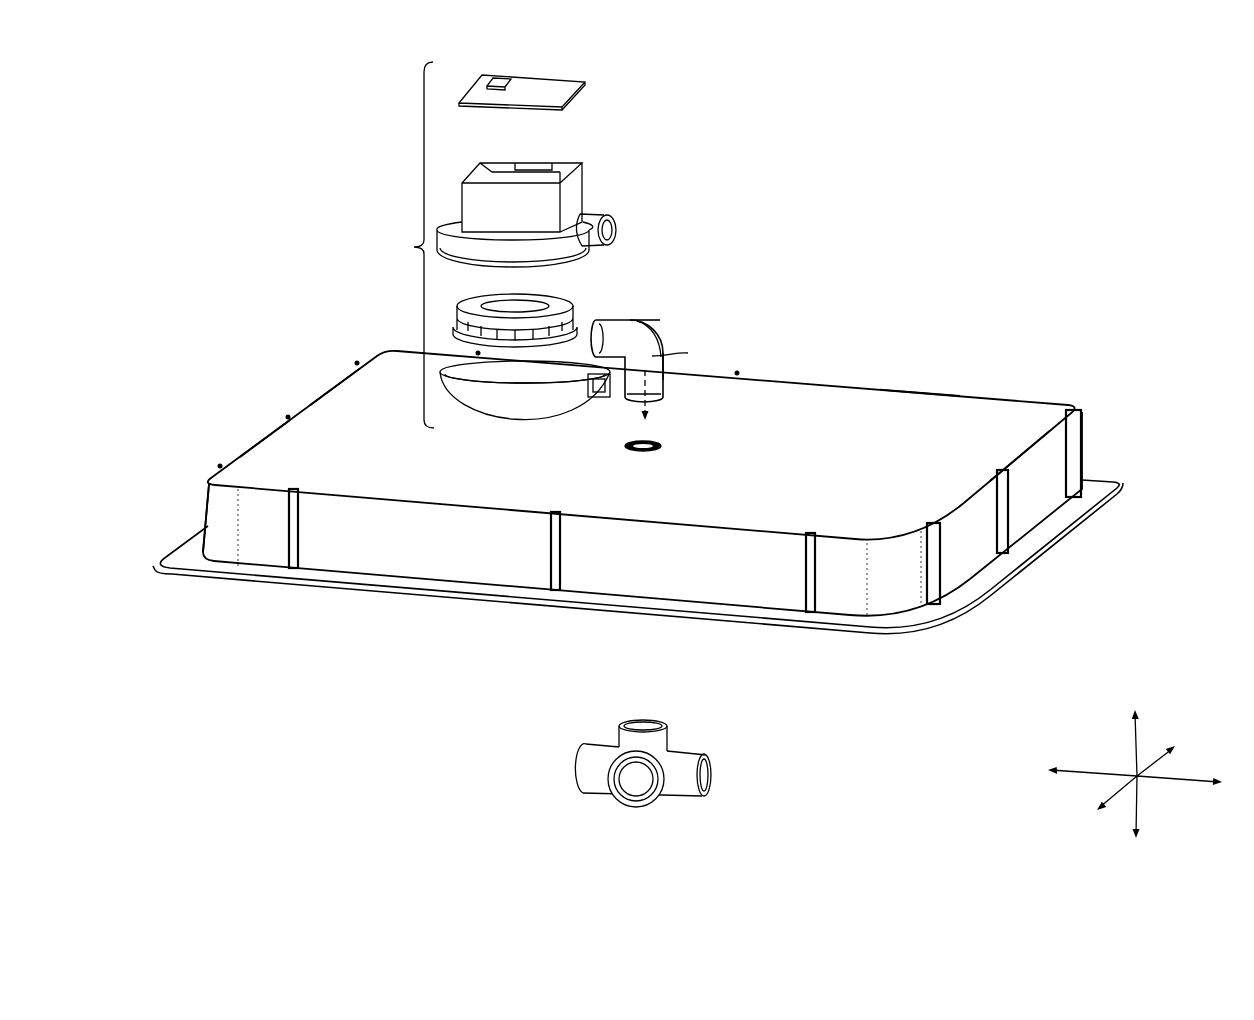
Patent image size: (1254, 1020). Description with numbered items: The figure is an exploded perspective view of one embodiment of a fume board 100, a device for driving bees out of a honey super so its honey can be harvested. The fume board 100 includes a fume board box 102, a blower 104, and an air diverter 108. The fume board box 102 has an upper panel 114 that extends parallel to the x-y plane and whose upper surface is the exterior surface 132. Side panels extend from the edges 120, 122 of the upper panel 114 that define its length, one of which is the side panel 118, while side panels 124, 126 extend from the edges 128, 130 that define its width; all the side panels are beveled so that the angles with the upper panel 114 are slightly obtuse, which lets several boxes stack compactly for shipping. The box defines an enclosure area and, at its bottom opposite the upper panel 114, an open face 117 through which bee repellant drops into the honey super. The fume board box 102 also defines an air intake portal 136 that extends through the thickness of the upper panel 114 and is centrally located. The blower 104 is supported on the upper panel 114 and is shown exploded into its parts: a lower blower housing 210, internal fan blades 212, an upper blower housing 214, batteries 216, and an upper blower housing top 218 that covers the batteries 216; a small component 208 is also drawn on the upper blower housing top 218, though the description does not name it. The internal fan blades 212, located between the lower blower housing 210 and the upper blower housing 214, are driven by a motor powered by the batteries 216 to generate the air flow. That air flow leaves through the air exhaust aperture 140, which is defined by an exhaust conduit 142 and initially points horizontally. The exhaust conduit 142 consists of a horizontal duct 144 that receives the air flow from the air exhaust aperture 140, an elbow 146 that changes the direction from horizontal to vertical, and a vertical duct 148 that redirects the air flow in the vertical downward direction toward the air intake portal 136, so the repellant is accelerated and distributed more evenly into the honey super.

The fume board 100 is at (948, 130).
The fume board box 102 is at (1040, 410).
The blower 104 is at (511, 239).
The air diverter 108 is at (682, 761).
The upper panel 114 is at (330, 408).
The open face 117 is at (874, 668).
The side panel 118 is at (606, 575).
The edge 120 is at (790, 378).
The edge 122 is at (686, 518).
The side panel 124 is at (180, 505).
The side panel 126 is at (1030, 507).
The edge 128 is at (259, 439).
The edge 130 is at (1047, 455).
The exterior surface 132 is at (897, 414).
The air intake portal 136 is at (657, 443).
The air exhaust aperture 140 is at (591, 332).
The exhaust conduit 142 is at (649, 340).
The horizontal duct 144 is at (641, 326).
The elbow 146 is at (666, 337).
The vertical duct 148 is at (670, 346).
The sensor chip 208 is at (510, 62).
The lower blower housing 210 is at (490, 411).
The internal fan blades 212 is at (565, 310).
The upper blower housing 214 is at (598, 222).
The batteries 216 is at (568, 158).
The upper blower housing top 218 is at (568, 87).